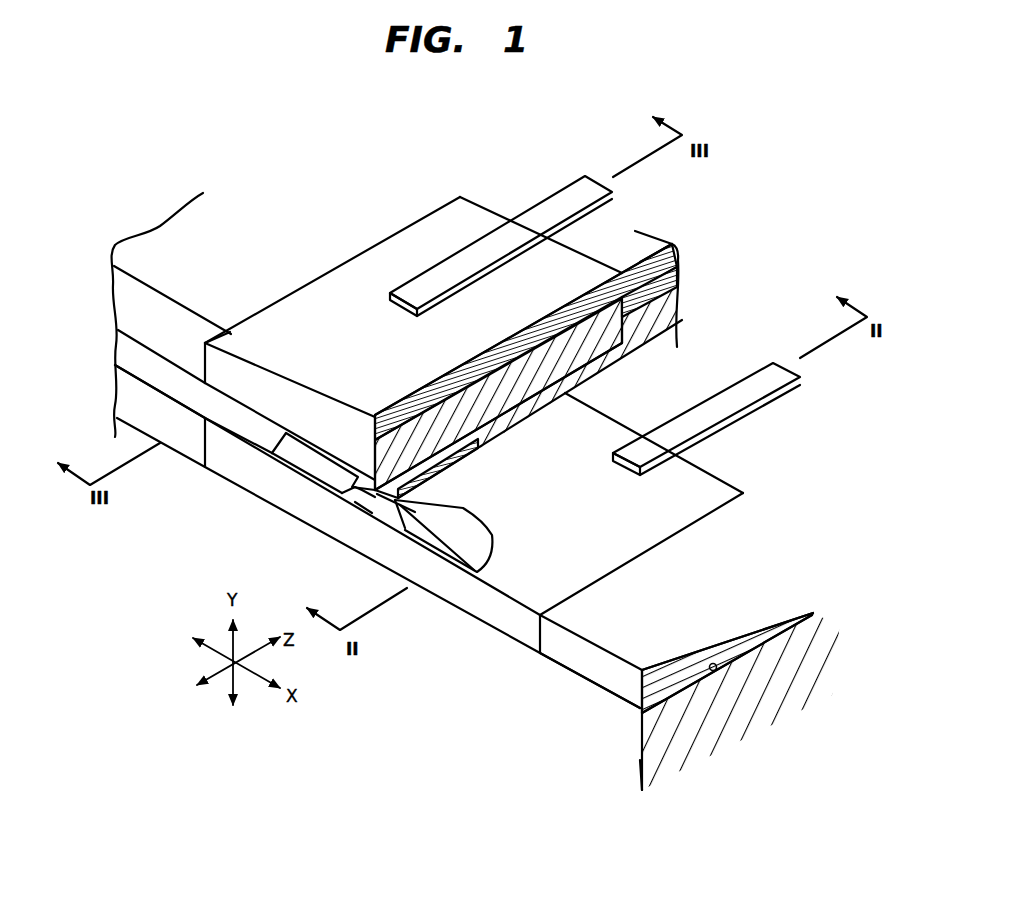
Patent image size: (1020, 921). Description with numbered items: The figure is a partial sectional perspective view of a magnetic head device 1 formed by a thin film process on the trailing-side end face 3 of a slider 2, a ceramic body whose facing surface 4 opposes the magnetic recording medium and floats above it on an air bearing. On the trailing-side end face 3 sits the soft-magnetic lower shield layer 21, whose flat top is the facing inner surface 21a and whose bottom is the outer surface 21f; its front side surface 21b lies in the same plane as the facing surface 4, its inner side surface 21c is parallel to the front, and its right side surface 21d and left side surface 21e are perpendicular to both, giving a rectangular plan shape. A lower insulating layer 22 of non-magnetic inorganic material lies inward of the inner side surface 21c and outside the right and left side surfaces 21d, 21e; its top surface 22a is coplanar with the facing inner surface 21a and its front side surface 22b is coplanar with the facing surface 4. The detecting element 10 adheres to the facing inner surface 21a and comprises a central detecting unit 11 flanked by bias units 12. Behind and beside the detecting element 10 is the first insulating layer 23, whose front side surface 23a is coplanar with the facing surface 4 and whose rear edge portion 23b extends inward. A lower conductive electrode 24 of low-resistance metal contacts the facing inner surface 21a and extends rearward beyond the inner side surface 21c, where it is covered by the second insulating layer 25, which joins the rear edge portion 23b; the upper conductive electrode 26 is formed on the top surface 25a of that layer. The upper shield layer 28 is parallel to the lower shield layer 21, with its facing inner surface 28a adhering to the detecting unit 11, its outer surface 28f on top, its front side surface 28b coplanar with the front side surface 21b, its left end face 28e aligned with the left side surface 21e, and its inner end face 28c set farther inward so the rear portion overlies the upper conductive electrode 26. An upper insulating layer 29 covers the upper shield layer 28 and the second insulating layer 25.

The magnetic head device 1 is at (452, 173).
The slider 2 is at (607, 742).
The trailing-side end face 3 is at (715, 670).
The facing surface 4 is at (630, 757).
The detecting element 10 is at (357, 512).
The detecting unit 11 is at (375, 500).
The bias units 12 is at (305, 467).
The lower shield layer 21 is at (488, 598).
The facing inner surface 21a is at (532, 580).
The front side surface 21b is at (230, 448).
The inner side surface 21c is at (720, 478).
The right side surface 21d is at (627, 567).
The left side surface 21e is at (204, 445).
The outer surface 21f is at (518, 638).
The lower insulating layer 22 is at (757, 583).
The top surface of the lower insulating layer 22a is at (730, 603).
The front side surface of the lower insulating layer 22b is at (140, 407).
The first insulating layer 23 is at (137, 355).
The front side surface of the first insulating layer 23a is at (147, 377).
The rear edge portion 23b is at (485, 452).
The lower conductive electrode 24 is at (710, 407).
The second insulating layer 25 is at (610, 365).
The top surface of the second insulating layer 25a is at (680, 304).
The upper conductive electrode 26 is at (552, 210).
The upper shield layer 28 is at (462, 415).
The facing inner surface of the upper shield layer 28a is at (512, 418).
The front side surface of the upper shield layer 28b is at (218, 362).
The inner end face of the upper shield layer 28c is at (680, 272).
The left end face of the upper shield layer 28e is at (198, 354).
The outer surface of the upper shield layer 28f is at (420, 400).
The upper insulating layer 29 is at (632, 240).